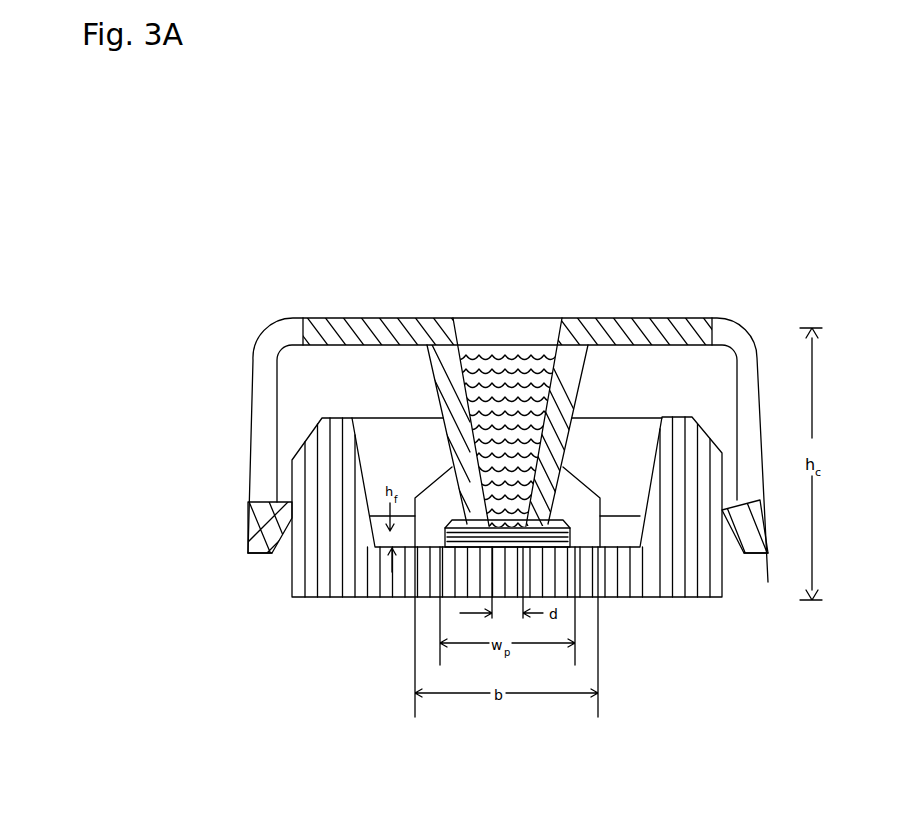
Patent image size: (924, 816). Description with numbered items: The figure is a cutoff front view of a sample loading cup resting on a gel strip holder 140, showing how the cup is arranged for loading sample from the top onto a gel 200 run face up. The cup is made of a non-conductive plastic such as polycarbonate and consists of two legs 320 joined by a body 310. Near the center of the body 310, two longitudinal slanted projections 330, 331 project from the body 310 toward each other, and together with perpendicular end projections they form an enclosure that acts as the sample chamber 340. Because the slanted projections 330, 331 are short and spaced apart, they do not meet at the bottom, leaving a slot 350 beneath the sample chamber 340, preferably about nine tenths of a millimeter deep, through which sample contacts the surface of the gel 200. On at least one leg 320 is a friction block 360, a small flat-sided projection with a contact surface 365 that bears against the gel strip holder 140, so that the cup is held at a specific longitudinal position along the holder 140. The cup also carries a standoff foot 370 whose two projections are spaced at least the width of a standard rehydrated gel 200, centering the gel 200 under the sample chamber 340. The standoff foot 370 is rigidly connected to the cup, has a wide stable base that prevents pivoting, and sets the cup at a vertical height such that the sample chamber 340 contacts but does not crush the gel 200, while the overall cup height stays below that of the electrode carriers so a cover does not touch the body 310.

The gel strip holder 140 is at (355, 587).
The gel 200 is at (515, 531).
The body 310 is at (380, 331).
The leg 320 is at (260, 428).
The longitudinal slanted projection 330 is at (451, 366).
The longitudinal slanted projection 331 is at (572, 403).
The sample chamber 340 is at (488, 355).
The slot 350 is at (545, 548).
The friction block 360 is at (255, 547).
The contact surface 365 is at (292, 515).
The standoff foot 370 is at (583, 533).